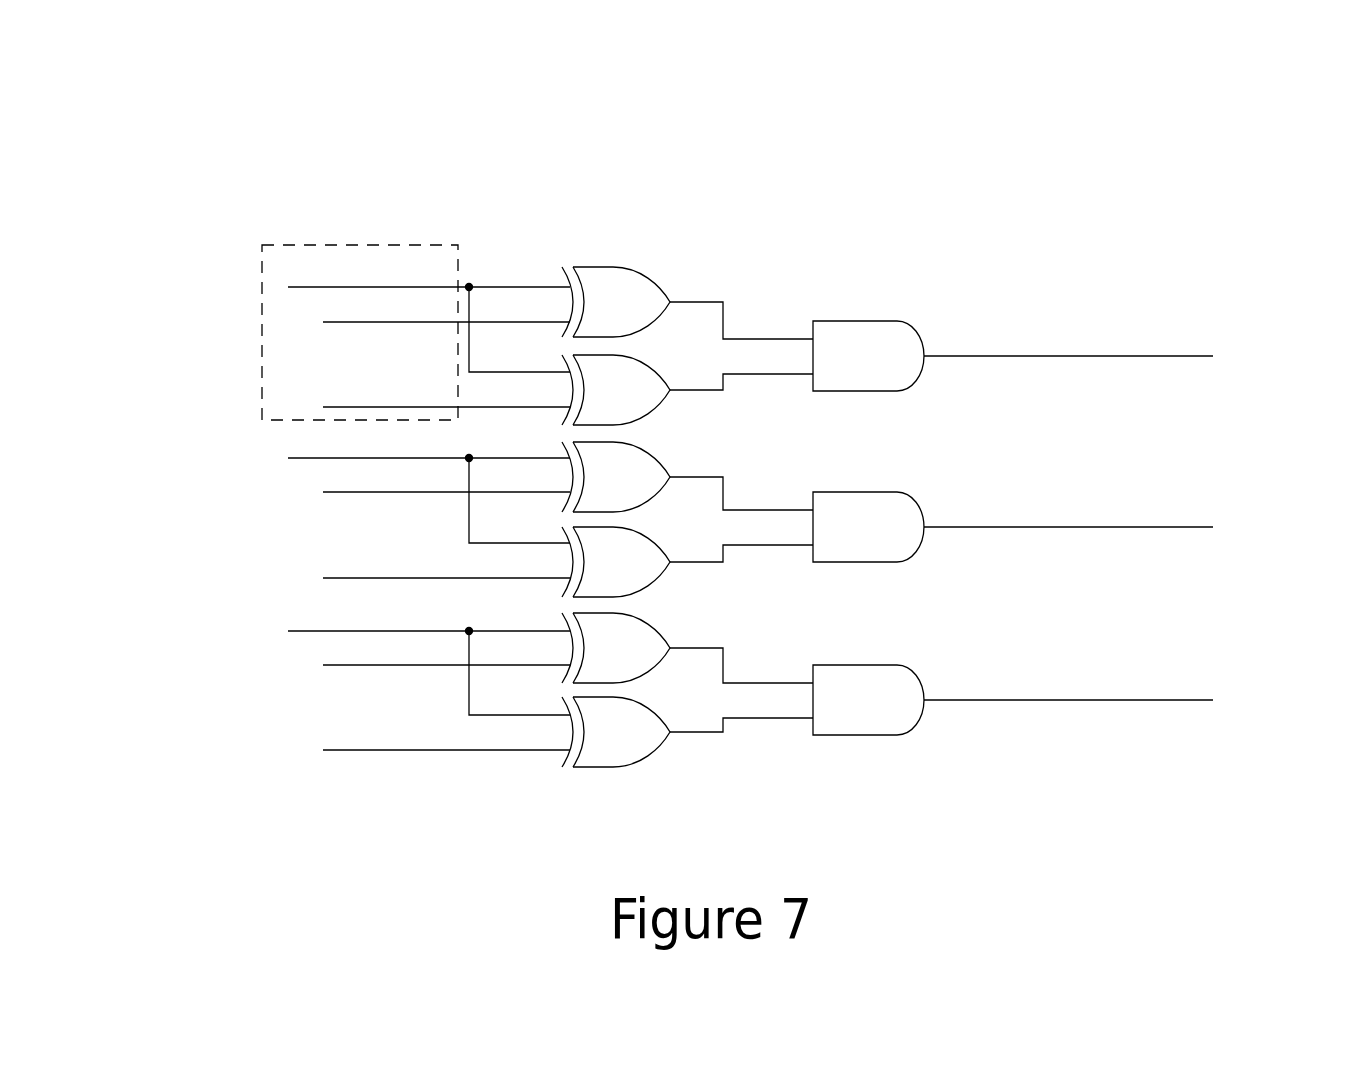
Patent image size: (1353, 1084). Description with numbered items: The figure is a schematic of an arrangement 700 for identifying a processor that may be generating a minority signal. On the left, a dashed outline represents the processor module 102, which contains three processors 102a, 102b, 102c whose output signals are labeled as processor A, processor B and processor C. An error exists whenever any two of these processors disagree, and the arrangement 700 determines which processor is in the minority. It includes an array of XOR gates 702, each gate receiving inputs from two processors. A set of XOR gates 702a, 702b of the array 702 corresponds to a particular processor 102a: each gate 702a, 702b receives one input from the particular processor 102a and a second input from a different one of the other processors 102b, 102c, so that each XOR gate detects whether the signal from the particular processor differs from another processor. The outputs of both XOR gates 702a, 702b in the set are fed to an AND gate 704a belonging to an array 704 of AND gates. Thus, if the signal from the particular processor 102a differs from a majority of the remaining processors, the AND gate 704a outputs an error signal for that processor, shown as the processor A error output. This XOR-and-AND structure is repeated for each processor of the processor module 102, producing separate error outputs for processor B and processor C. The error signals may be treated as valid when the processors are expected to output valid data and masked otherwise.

The arrangement 700 is at (1102, 215).
The processor module 102 is at (322, 245).
The processor 102a is at (282, 280).
The processor 102b is at (313, 312).
The processor 102c is at (313, 395).
The array of XOR gates 702 is at (612, 216).
The XOR gate 702a is at (648, 270).
The XOR gate 702b is at (657, 410).
The array of AND gates 704 is at (871, 252).
The AND gate 704a is at (900, 322).